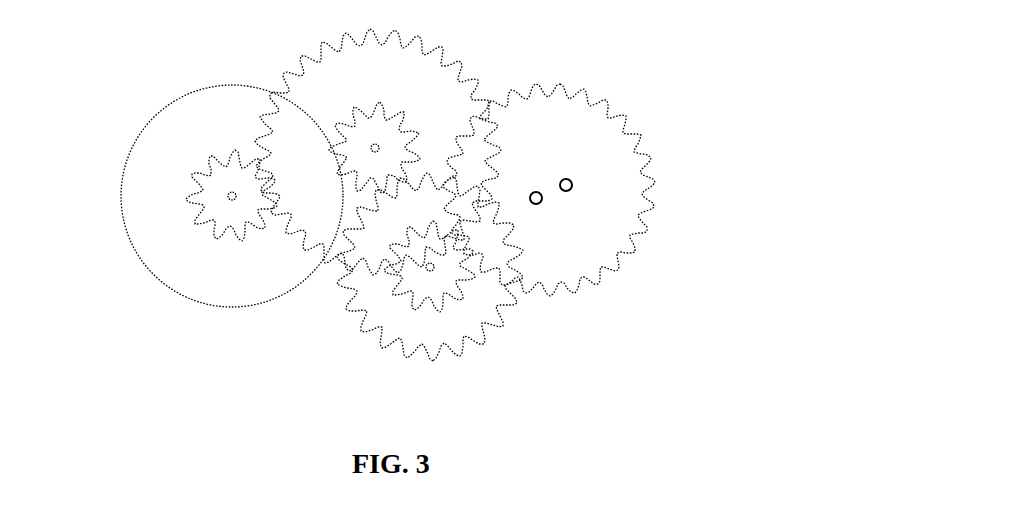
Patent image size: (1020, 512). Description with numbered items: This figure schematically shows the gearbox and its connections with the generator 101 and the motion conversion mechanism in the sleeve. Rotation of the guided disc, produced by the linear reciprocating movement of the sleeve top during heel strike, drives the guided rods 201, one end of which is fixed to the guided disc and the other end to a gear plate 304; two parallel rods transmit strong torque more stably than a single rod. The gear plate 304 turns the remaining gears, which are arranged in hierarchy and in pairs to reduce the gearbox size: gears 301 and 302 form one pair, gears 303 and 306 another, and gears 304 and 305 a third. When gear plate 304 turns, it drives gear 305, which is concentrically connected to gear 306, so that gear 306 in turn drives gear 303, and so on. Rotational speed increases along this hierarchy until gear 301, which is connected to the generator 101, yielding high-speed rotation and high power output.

The generator 101 is at (185, 270).
The guided rods 201 is at (575, 197).
The gear 301 is at (197, 178).
The gear 302 is at (322, 50).
The gear 303 is at (407, 115).
The gear plate 304 is at (617, 131).
The gear 305 is at (448, 303).
The gear 306 is at (370, 321).